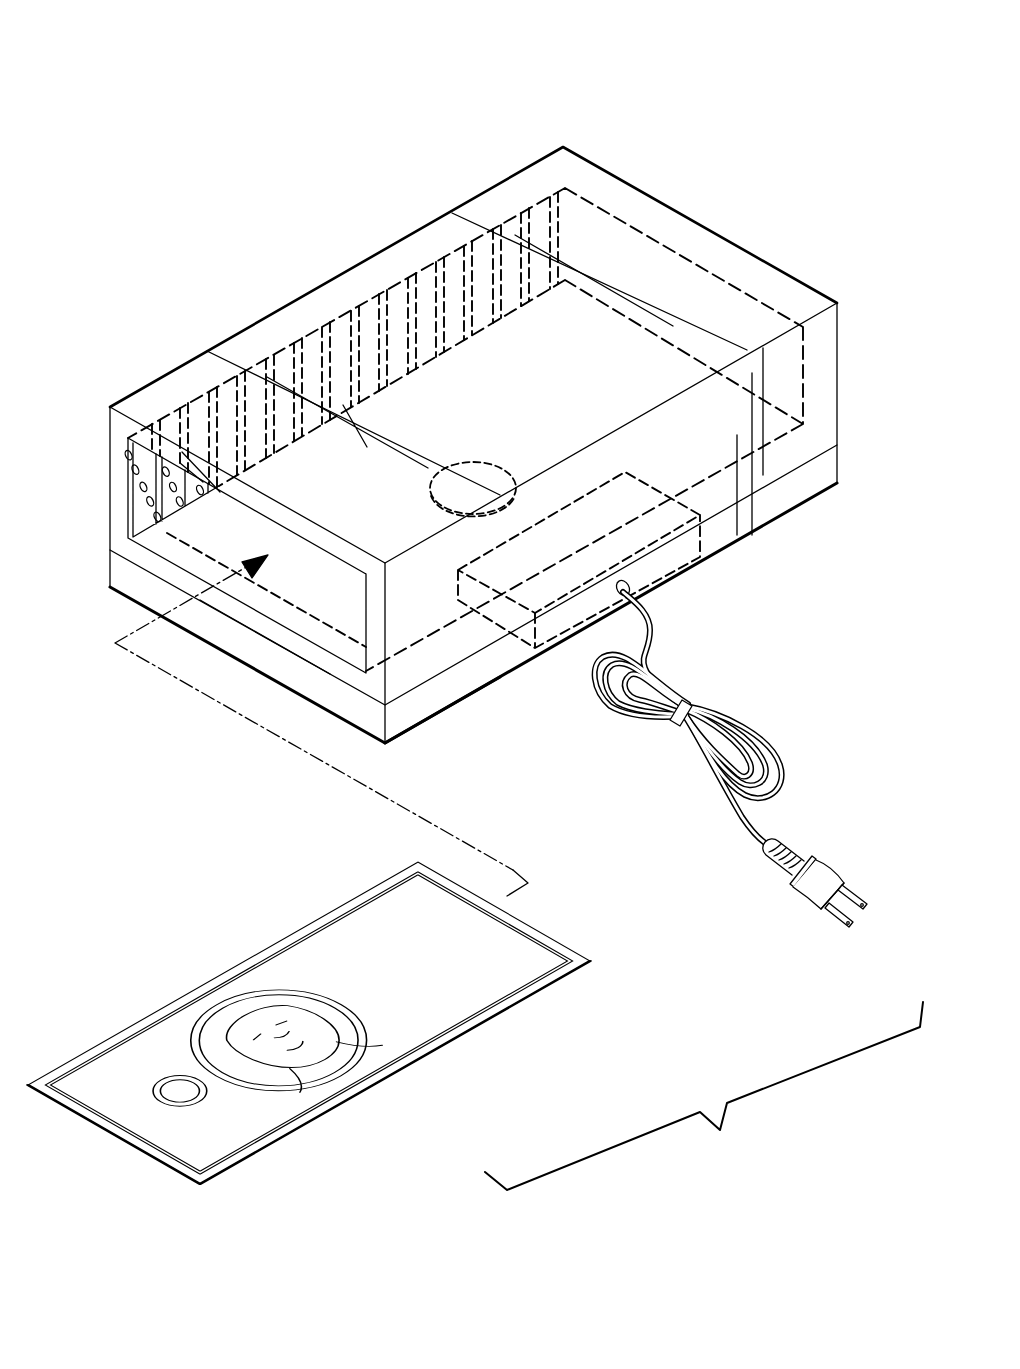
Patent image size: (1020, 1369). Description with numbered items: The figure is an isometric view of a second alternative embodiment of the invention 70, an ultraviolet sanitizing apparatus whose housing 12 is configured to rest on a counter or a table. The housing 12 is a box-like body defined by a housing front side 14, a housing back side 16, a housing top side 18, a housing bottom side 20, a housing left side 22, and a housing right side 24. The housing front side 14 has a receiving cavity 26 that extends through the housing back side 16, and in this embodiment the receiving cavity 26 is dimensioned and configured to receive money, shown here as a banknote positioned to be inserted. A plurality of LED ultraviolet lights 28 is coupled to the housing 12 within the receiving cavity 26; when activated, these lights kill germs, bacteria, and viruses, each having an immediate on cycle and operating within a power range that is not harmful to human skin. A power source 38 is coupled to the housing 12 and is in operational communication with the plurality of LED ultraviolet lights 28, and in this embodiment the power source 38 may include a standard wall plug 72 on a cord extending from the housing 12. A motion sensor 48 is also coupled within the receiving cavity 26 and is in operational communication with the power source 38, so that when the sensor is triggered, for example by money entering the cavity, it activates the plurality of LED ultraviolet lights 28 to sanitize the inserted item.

The housing 12 is at (235, 336).
The housing front side 14 is at (288, 667).
The housing back side 16 is at (640, 190).
The housing top side 18 is at (487, 220).
The housing bottom side 20 is at (410, 730).
The housing left side 22 is at (110, 503).
The housing right side 24 is at (773, 507).
The receiving cavity 26 is at (292, 583).
The plurality of LED ultraviolet lights 28 is at (143, 500).
The power source 38 is at (673, 557).
The motion sensor 48 is at (487, 470).
The second alternative embodiment of the invention 70 is at (724, 122).
The standard wall plug 72 is at (708, 723).